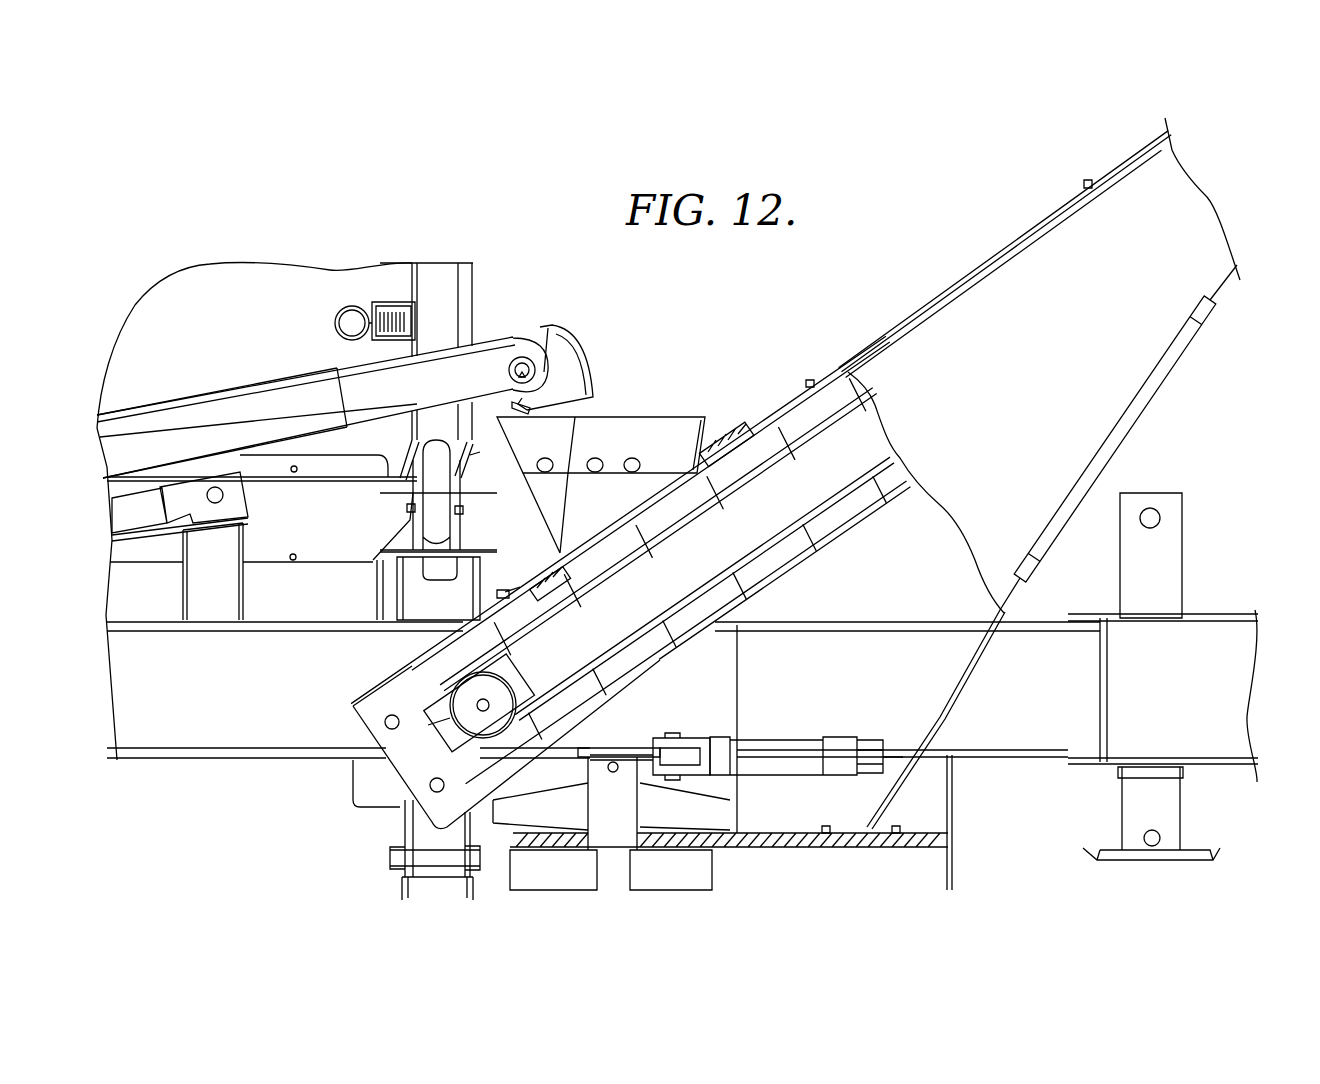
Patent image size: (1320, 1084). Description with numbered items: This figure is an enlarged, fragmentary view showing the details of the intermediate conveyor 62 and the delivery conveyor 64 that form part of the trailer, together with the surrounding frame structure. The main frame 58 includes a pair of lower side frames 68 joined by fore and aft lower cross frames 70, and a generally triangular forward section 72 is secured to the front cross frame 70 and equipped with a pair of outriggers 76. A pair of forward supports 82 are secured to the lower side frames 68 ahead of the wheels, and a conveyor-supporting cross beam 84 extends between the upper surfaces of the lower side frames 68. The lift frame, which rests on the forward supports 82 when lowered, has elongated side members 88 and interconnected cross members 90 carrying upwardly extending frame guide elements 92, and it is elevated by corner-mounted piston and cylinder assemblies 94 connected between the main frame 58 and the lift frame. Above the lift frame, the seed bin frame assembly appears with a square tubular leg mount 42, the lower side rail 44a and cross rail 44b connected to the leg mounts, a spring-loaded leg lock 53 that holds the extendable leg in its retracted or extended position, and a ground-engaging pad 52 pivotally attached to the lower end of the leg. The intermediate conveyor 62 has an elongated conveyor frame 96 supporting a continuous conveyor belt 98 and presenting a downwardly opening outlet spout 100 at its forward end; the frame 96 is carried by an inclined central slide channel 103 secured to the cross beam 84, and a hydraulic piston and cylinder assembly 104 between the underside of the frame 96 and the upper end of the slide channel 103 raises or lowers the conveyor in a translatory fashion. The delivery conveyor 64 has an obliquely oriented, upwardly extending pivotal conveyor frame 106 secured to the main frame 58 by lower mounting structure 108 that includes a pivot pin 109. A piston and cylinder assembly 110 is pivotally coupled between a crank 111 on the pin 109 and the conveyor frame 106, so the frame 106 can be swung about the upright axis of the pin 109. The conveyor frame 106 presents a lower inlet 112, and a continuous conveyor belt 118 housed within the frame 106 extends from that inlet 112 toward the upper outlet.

The leg mount 42 is at (445, 268).
The leg lock 53 is at (386, 310).
The intermediate conveyor 62 is at (252, 384).
The conveyor frame 96 is at (218, 425).
The conveyor belt 98 is at (500, 345).
The outlet spout 100 is at (590, 346).
The side rail 44a is at (338, 447).
The cross rail 44b is at (415, 445).
The frame guide element 92 is at (450, 478).
The cross member 90 is at (412, 515).
The forward support 82 is at (400, 580).
The cross beam 84 is at (186, 585).
The side member 88 is at (310, 552).
The piston and cylinder assembly 104 is at (155, 534).
The slide channel 103 is at (128, 540).
The frame 58 is at (137, 768).
The lower side frame 68 is at (233, 740).
The ground-engaging pad 52 is at (360, 782).
The piston and cylinder assembly 94 is at (411, 832).
The lower mounting structure 108 is at (732, 882).
The conveyor belt 118 is at (862, 472).
The lower inlet 112 is at (665, 428).
The delivery conveyor 64 is at (1031, 192).
The conveyor frame 106 is at (1128, 355).
The outrigger 76 is at (1178, 545).
The lower cross frame 70 is at (1107, 696).
The forward section 72 is at (1228, 680).
The piston and cylinder assembly 110 is at (786, 748).
The crank 111 is at (648, 737).
The pivot pin 109 is at (633, 797).